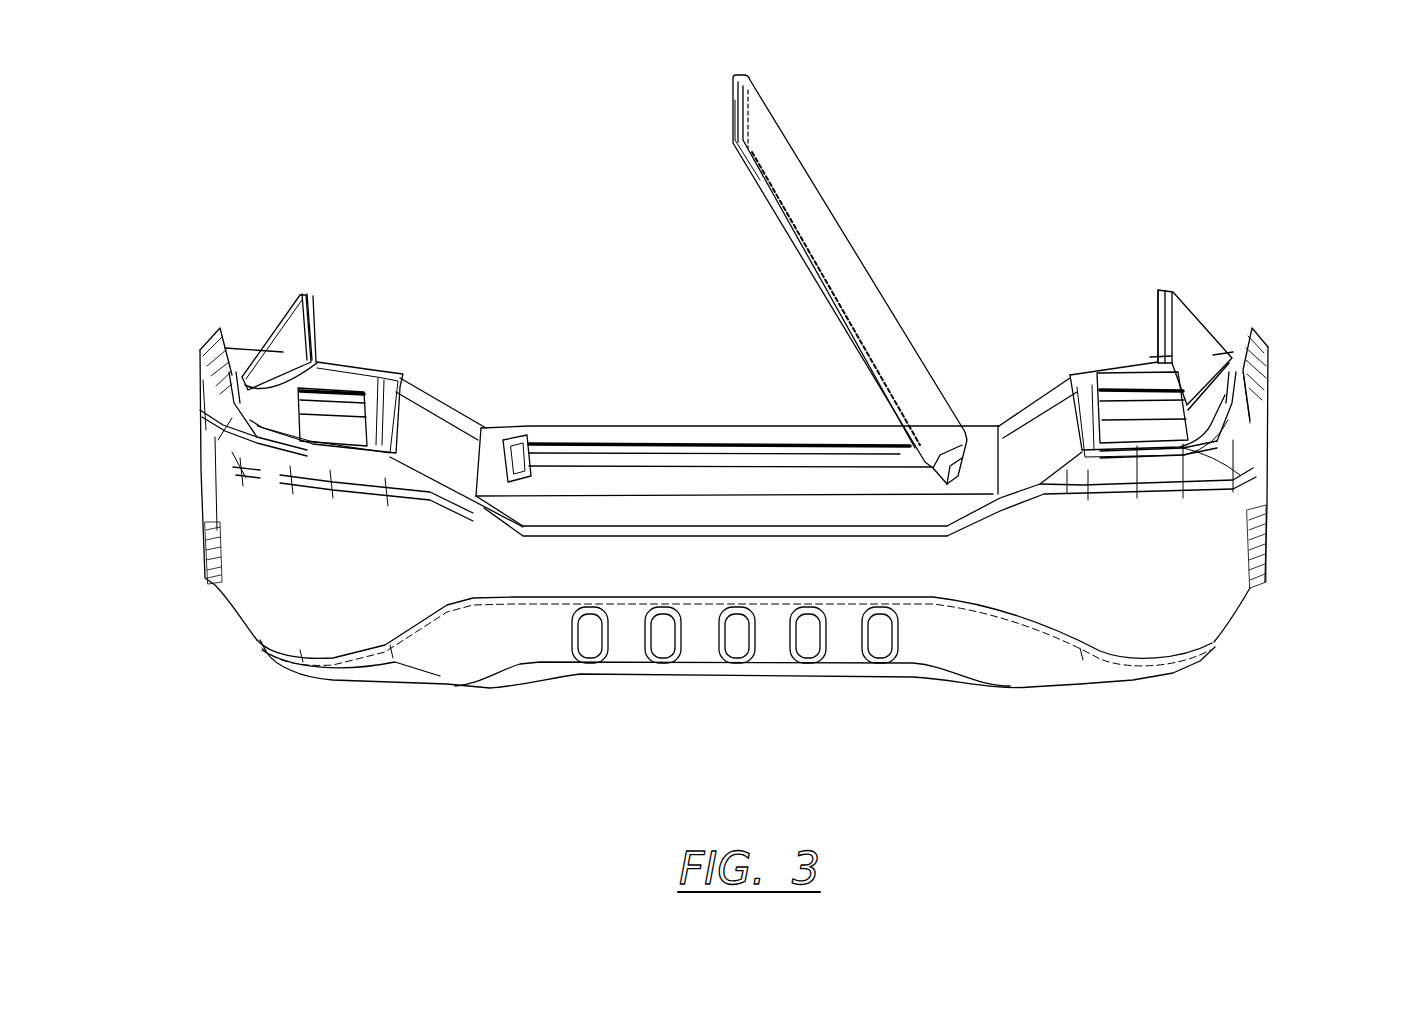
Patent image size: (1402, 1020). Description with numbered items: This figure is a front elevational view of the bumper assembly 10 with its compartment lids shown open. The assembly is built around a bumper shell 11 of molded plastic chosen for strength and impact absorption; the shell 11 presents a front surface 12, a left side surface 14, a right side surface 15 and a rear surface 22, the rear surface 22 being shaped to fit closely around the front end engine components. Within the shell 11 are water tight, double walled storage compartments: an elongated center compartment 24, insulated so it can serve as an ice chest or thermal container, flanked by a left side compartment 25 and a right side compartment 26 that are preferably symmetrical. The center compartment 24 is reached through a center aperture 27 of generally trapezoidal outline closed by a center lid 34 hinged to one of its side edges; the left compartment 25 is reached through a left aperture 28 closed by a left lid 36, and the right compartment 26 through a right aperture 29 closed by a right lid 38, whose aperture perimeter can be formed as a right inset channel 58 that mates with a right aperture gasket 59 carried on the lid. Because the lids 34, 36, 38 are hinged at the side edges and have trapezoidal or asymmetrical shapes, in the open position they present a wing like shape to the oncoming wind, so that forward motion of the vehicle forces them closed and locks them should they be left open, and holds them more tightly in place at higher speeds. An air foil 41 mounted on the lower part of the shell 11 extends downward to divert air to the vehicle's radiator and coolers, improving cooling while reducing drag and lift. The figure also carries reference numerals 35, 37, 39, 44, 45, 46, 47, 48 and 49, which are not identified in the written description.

The bumper assembly 10 is at (418, 758).
The bumper shell 11 is at (1214, 639).
The front surface 12 is at (428, 563).
The left side surface 14 is at (1270, 493).
The right side surface 15 is at (200, 514).
The rear surface 22 is at (926, 679).
The center compartment 24 is at (728, 472).
The left side compartment 25 is at (1147, 434).
The right side compartment 26 is at (333, 423).
The center aperture 27 is at (520, 441).
The left aperture 28 is at (1095, 410).
The right aperture 29 is at (377, 377).
The center lid 34 is at (836, 265).
The lid lower end 35 is at (972, 455).
The left lid 36 is at (1190, 338).
The right corner post 37 is at (1255, 330).
The right lid 38 is at (272, 358).
The left corner post 39 is at (197, 367).
The air foil 41 is at (695, 668).
The lid seal 44 is at (798, 271).
The lid edge 45 is at (789, 140).
The right surface curve 46 is at (1183, 420).
The right flap hinge edge 47 is at (1188, 304).
The left surface 48 is at (300, 413).
The left flap edge 49 is at (290, 323).
The right inset channel 58 is at (320, 392).
The right aperture gasket 59 is at (312, 293).